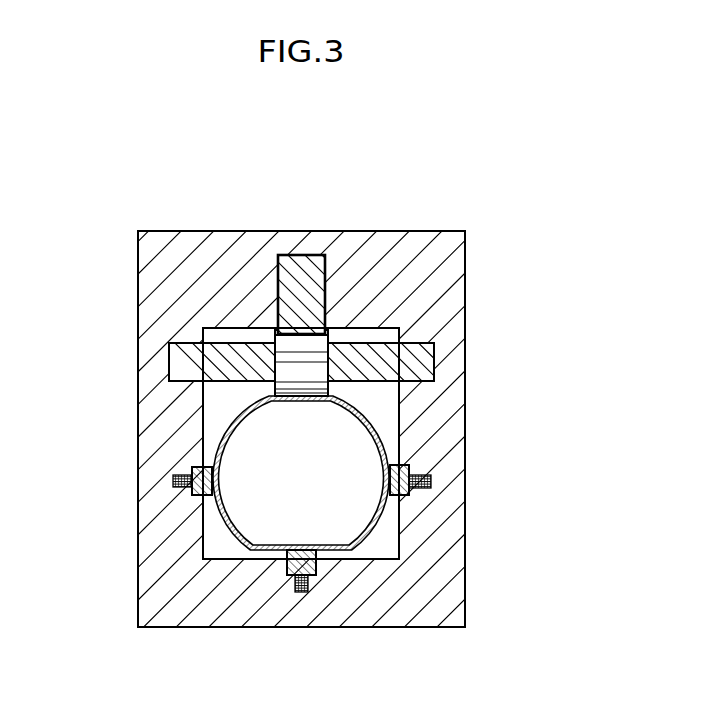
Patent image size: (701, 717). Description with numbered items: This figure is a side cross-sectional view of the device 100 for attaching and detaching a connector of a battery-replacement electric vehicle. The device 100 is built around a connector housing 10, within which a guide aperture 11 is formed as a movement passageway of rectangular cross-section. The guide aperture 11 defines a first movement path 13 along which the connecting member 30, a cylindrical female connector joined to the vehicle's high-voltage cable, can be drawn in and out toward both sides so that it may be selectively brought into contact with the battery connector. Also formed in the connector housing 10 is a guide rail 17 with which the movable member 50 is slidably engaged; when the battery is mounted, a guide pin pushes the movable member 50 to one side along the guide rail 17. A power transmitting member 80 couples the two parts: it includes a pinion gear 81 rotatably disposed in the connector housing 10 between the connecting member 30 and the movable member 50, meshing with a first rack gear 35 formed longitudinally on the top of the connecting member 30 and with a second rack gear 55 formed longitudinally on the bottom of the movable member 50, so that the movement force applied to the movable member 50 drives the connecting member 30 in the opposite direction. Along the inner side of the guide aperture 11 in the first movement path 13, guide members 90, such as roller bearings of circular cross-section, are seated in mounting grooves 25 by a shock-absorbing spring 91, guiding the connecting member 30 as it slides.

The device 100 is at (289, 148).
The connector housing 10 is at (465, 430).
The guide aperture 11 is at (233, 557).
The first movement path 13 is at (380, 410).
The guide rail 17 is at (304, 260).
The mounting grooves 25 is at (195, 463).
The connecting member 30 is at (383, 523).
The first rack gear 35 is at (272, 390).
The movable member 50 is at (302, 253).
The second rack gear 55 is at (348, 334).
The power transmitting member 80 is at (300, 361).
The pinion gear 81 is at (283, 365).
The guide members 90 is at (300, 568).
The shock-absorbing spring 91 is at (177, 491).